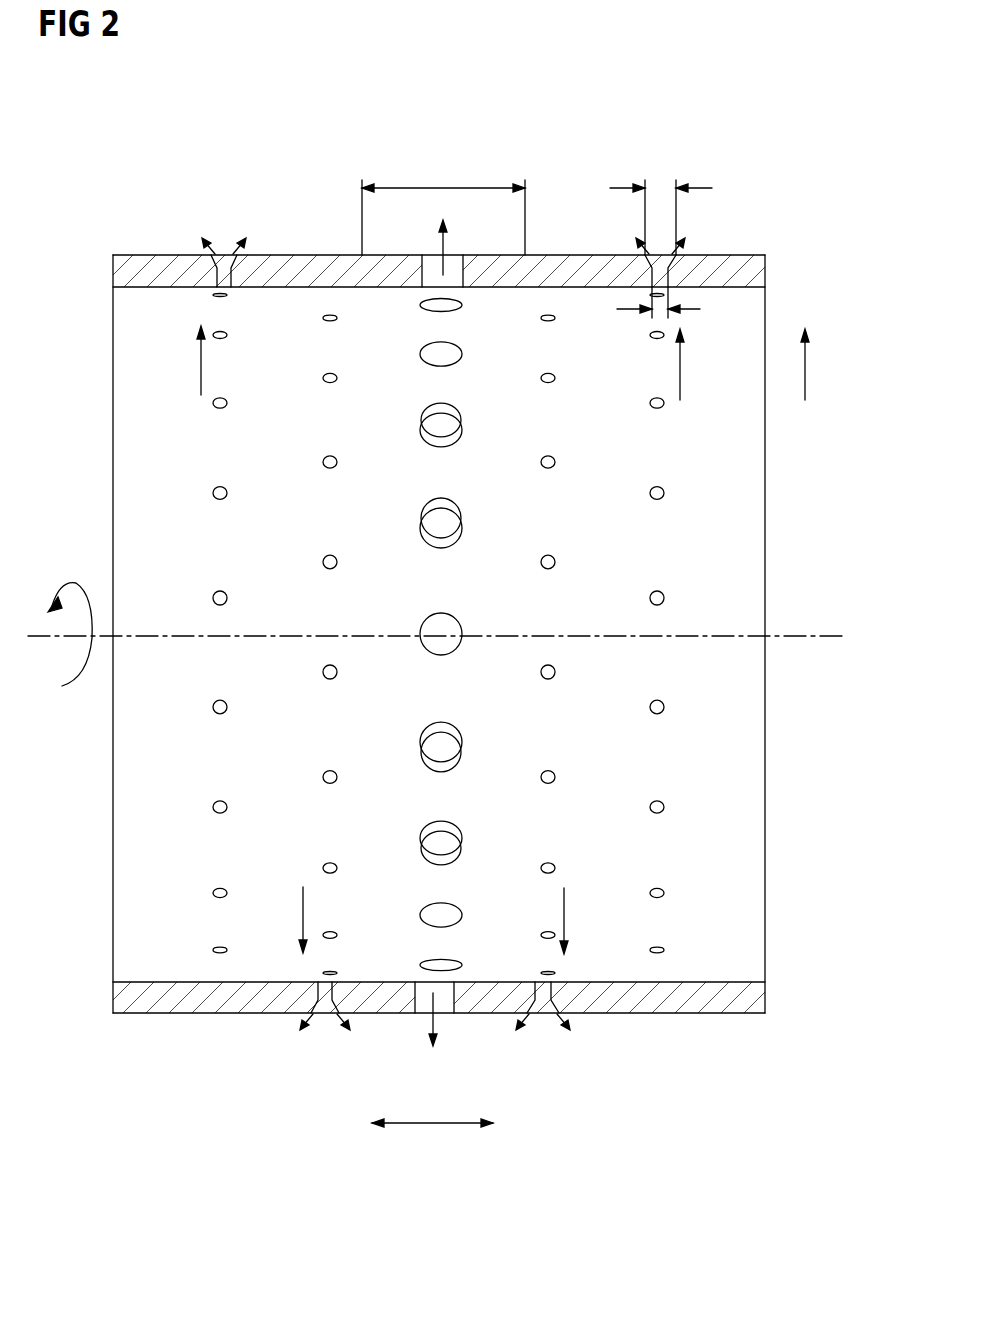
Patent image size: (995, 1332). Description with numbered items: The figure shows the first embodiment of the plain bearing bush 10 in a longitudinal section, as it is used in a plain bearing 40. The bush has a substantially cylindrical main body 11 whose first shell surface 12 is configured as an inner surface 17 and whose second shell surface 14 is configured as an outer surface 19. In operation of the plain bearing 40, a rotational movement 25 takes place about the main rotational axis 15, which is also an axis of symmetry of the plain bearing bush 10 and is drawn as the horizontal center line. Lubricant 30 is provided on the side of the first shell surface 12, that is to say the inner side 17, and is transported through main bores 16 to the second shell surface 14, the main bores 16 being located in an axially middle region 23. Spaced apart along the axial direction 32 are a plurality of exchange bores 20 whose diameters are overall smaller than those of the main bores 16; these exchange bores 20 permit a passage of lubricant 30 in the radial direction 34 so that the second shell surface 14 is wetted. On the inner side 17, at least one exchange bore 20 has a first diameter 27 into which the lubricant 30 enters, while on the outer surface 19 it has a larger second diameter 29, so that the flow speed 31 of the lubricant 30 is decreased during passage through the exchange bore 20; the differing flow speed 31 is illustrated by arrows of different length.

The plain bearing 40 is at (80, 163).
The plain bearing bush 10 is at (442, 201).
The main body 11 is at (442, 201).
The second shell surface 14 is at (439, 219).
The outer surface 19 is at (300, 254).
The first shell surface 12 is at (442, 1021).
The inner surface 17 is at (150, 972).
The main bores 16 is at (432, 262).
The exchange bores 20 is at (540, 673).
The lubricant 30 is at (445, 649).
The flow speed 31 is at (448, 244).
The axially middle region 23 is at (452, 183).
The second diameter 29 is at (661, 186).
The first diameter 27 is at (660, 316).
The axial direction 32 is at (437, 1126).
The main rotational axis 15 is at (808, 635).
The rotational movement 25 is at (74, 581).
The radial direction 34 is at (807, 367).